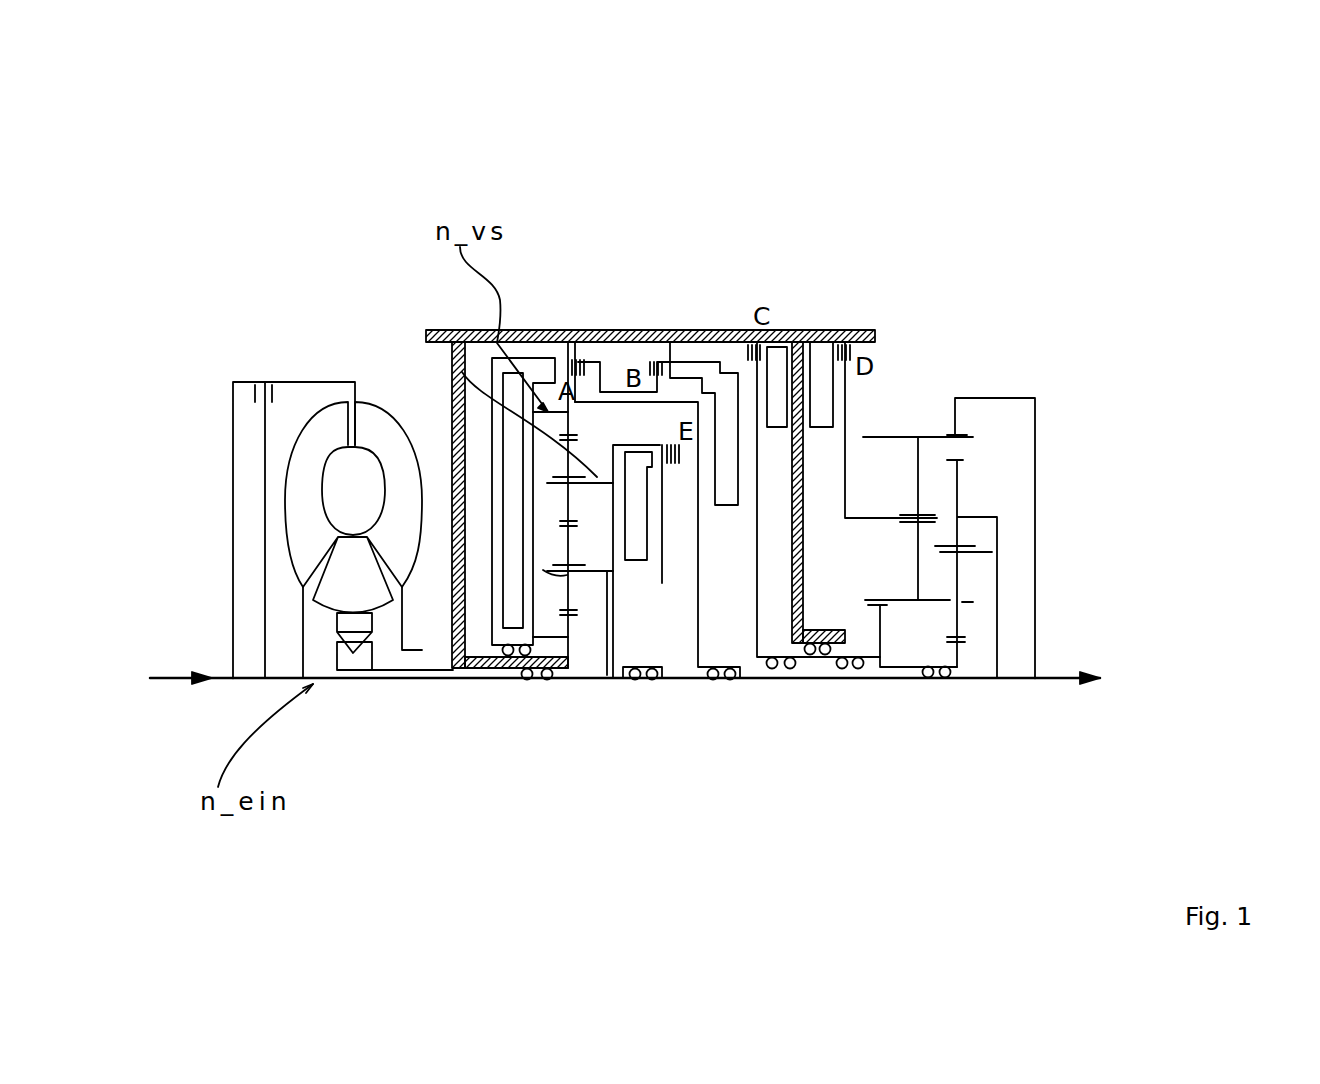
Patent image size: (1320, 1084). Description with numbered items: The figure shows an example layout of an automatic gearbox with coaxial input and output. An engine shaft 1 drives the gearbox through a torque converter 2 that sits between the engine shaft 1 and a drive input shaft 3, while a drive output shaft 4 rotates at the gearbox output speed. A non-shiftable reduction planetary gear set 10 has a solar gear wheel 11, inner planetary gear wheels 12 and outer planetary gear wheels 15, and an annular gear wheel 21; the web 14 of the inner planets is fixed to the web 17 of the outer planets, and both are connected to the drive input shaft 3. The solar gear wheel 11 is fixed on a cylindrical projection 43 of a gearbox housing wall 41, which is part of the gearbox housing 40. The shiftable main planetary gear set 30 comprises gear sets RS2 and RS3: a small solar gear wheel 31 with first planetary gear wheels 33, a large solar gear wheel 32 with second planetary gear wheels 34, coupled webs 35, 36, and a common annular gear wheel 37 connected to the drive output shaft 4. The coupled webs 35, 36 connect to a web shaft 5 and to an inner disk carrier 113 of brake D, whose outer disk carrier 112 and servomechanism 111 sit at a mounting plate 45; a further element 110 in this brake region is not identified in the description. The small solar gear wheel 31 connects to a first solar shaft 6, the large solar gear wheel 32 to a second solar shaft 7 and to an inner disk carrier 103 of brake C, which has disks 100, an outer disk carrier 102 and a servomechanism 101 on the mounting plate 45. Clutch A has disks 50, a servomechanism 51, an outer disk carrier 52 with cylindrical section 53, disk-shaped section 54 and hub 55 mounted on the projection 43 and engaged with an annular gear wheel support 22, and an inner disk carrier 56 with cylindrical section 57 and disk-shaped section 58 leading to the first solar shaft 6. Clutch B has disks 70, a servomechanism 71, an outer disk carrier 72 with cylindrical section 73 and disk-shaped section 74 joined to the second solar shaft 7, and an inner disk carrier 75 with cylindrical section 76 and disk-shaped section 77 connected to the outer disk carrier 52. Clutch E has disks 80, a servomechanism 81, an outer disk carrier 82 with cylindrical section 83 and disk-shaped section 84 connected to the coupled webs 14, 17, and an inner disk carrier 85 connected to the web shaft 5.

The engine shaft 1 is at (170, 678).
The torque converter 2 is at (395, 393).
The drive input shaft 3 is at (370, 681).
The drive output shaft 4 is at (1053, 678).
The web shaft 5 is at (800, 668).
The first solar shaft 6 is at (853, 668).
The second solar shaft 7 is at (870, 650).
The reduction planetary gear set 10 is at (573, 787).
The solar gear wheel 11 is at (582, 646).
The inner planetary gear wheels 12 is at (575, 597).
The web of the inner planetary gear wheels 14 is at (655, 540).
The outer planetary gear wheels 15 is at (568, 505).
The web of the outer planetary gear wheels 17 is at (387, 395).
The annular gear wheel 21 is at (450, 365).
The annular gear wheel support 22 is at (533, 483).
The main planetary gear set 30 is at (930, 718).
The small solar gear wheel 31 is at (960, 650).
The large solar gear wheel 32 is at (910, 678).
The first planetary gear wheels 33 is at (957, 477).
The second planetary gear wheels 34 is at (973, 462).
The web of the first planetary gear wheels 35 is at (987, 547).
The web of the second planetary gear wheels 36 is at (977, 517).
The common annular gear wheel 37 is at (965, 415).
The gearbox housing 40 is at (480, 335).
The gearbox housing wall 41 is at (452, 463).
The cylindrical projection 43 is at (443, 670).
The mounting plate 45 is at (805, 557).
The disks of clutch A 50 is at (558, 358).
The servomechanism of clutch A 51 is at (487, 335).
The outer disk carrier of clutch A 52 is at (578, 352).
The cylindrical section of the outer disk carrier of clutch A 53 is at (543, 358).
The disk-shaped section of the outer disk carrier of clutch A 54 is at (500, 505).
The hub of the outer disk carrier of clutch A 55 is at (520, 652).
The inner disk carrier of clutch A 56 is at (596, 409).
The cylindrical section of the inner disk carrier of clutch A 57 is at (642, 405).
The disk-shaped section of the inner disk carrier of clutch A 58 is at (762, 600).
The disks of clutch B 70 is at (660, 430).
The servomechanism of clutch B 71 is at (690, 372).
The outer disk carrier of clutch B 72 is at (683, 370).
The cylindrical section of the outer disk carrier of clutch B 73 is at (733, 372).
The disk-shaped section of the outer disk carrier of clutch B 74 is at (775, 640).
The inner disk carrier of clutch B 75 is at (645, 370).
The cylindrical section of the inner disk carrier of clutch B 76 is at (603, 372).
The disk-shaped section of the inner disk carrier of clutch B 77 is at (612, 372).
The disks of clutch E 80 is at (722, 600).
The servomechanism of clutch E 81 is at (718, 520).
The outer disk carrier of clutch E 82 is at (708, 393).
The cylindrical section of the outer disk carrier of clutch E 83 is at (700, 540).
The disk-shaped section of the outer disk carrier of clutch E 84 is at (675, 540).
The inner disk carrier of clutch E 85 is at (750, 600).
The disks of brake C 100 is at (805, 332).
The servomechanism of brake C 101 is at (853, 327).
The outer disk carrier of brake C 102 is at (768, 331).
The inner disk carrier of brake C 103 is at (833, 332).
The shaft 110 is at (860, 378).
The servomechanism of brake D 111 is at (848, 400).
The outer disk carrier of brake D 112 is at (848, 360).
The inner disk carrier of brake D 113 is at (853, 462).
The gear set RS2 is at (930, 843).
The gear set RS3 is at (863, 843).